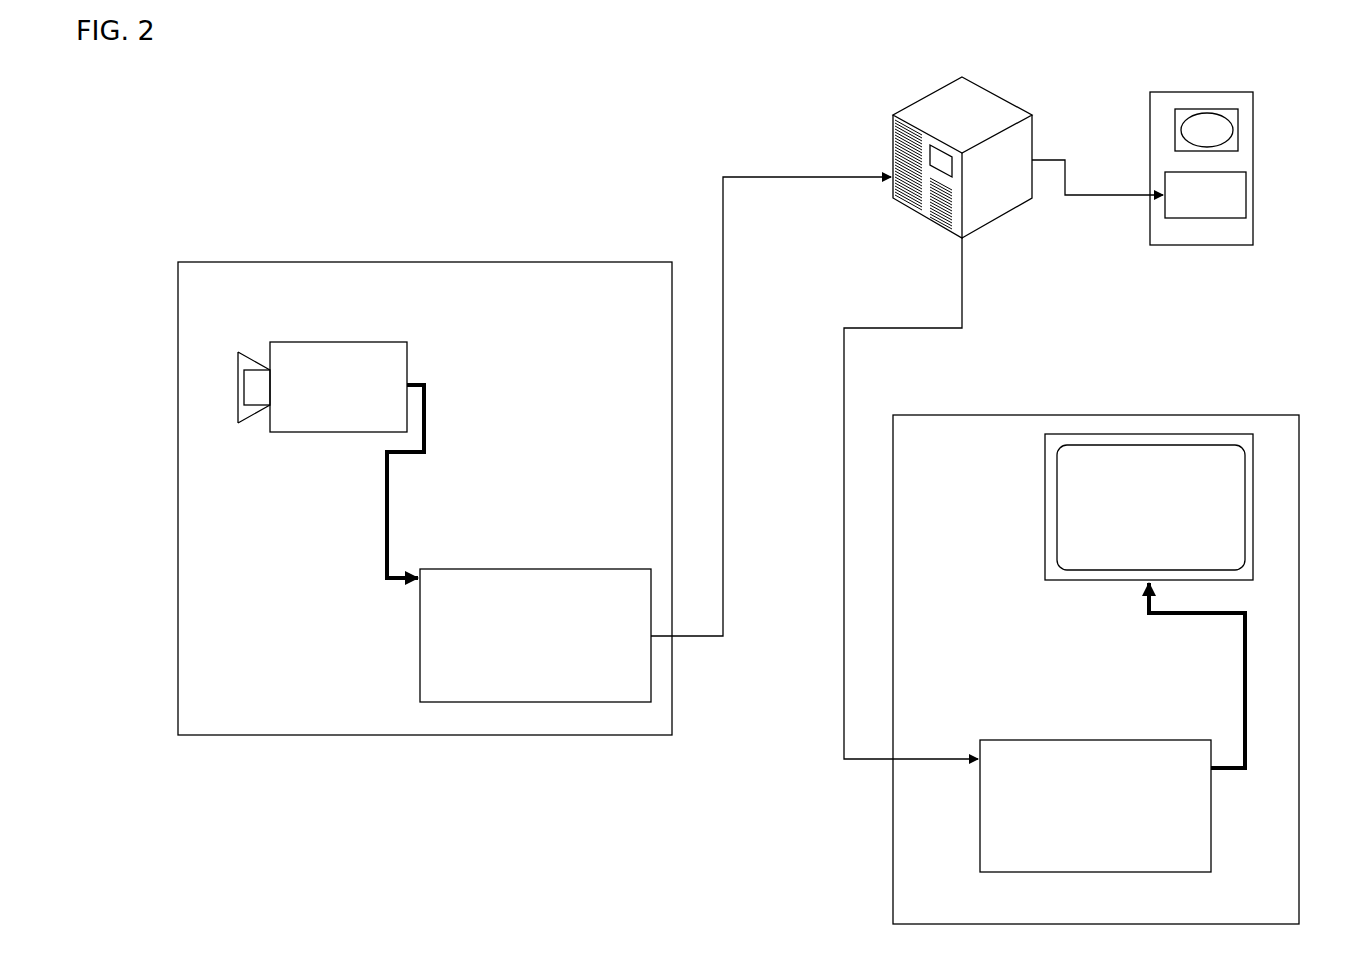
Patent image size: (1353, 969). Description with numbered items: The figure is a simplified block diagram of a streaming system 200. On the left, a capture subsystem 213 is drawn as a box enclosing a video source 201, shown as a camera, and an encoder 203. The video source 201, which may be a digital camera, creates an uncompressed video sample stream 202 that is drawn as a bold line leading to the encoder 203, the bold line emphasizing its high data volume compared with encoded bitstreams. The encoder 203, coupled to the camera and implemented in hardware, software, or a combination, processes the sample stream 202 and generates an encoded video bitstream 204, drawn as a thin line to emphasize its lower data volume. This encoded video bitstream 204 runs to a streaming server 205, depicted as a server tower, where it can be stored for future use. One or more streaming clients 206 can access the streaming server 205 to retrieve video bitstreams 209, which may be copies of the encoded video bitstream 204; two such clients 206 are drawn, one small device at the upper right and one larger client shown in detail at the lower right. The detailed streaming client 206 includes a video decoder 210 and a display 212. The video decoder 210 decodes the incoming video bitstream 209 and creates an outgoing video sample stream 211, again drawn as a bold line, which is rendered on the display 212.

The streaming system 200 is at (352, 72).
The video source 201 is at (341, 342).
The uncompressed video sample stream 202 is at (387, 522).
The encoder 203 is at (550, 569).
The encoded video bitstream 204 is at (723, 215).
The streaming server 205 is at (893, 155).
The streaming client 206 is at (1253, 135).
The video bitstream 209 is at (1073, 197).
The video decoder 210 is at (980, 853).
The outgoing video sample stream 211 is at (1245, 678).
The display 212 is at (1046, 511).
The capture subsystem 213 is at (330, 736).